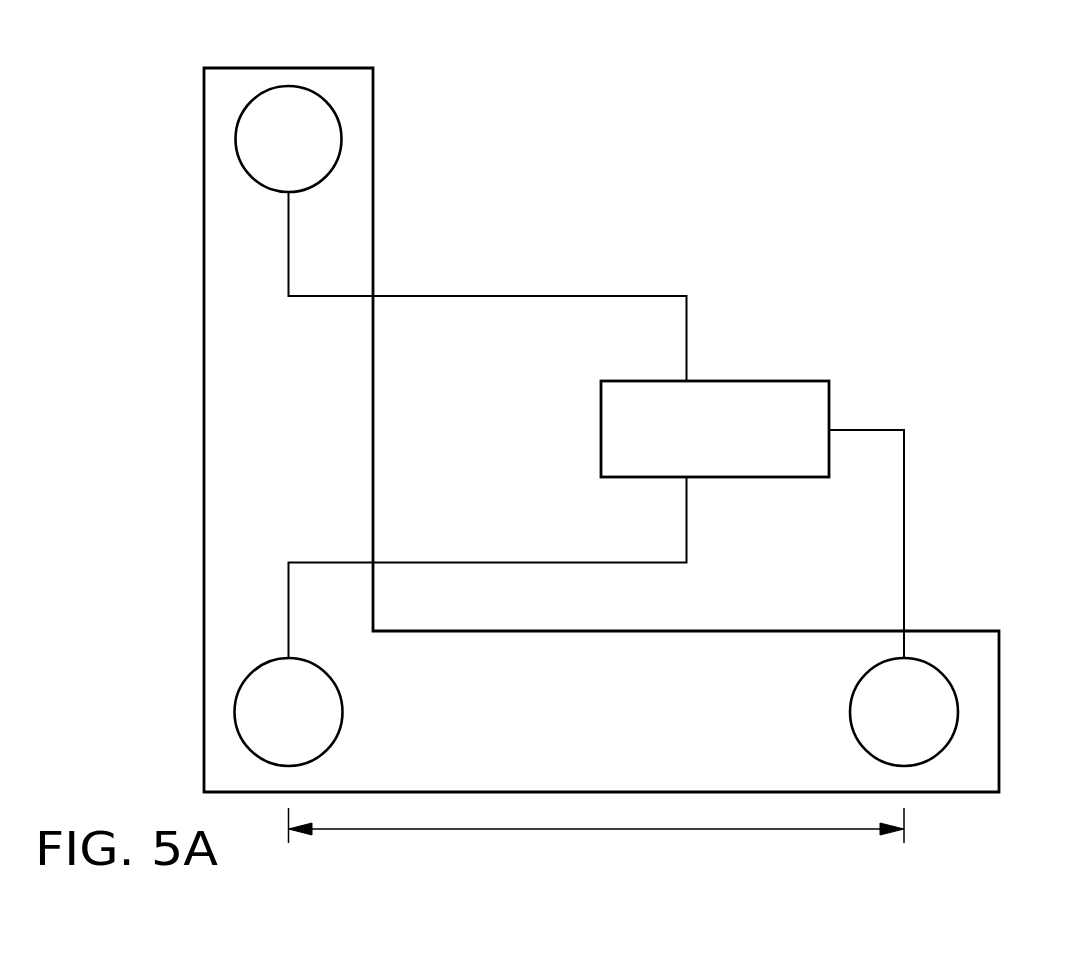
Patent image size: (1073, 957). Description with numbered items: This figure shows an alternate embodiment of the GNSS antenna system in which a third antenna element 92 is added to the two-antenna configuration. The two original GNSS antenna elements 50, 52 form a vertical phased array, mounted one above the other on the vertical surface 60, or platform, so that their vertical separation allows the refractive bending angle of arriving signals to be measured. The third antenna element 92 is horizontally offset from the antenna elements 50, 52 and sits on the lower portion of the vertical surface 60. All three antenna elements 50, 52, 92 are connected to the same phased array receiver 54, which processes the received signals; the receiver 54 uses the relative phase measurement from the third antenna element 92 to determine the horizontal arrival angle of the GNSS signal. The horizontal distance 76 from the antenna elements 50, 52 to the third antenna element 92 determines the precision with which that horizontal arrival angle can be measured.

The antenna element 50 is at (253, 136).
The antenna element 52 is at (259, 708).
The phased array receiver 54 is at (752, 379).
The vertical surface 60 is at (204, 428).
The horizontal distance 76 is at (658, 829).
The third antenna element 92 is at (939, 716).